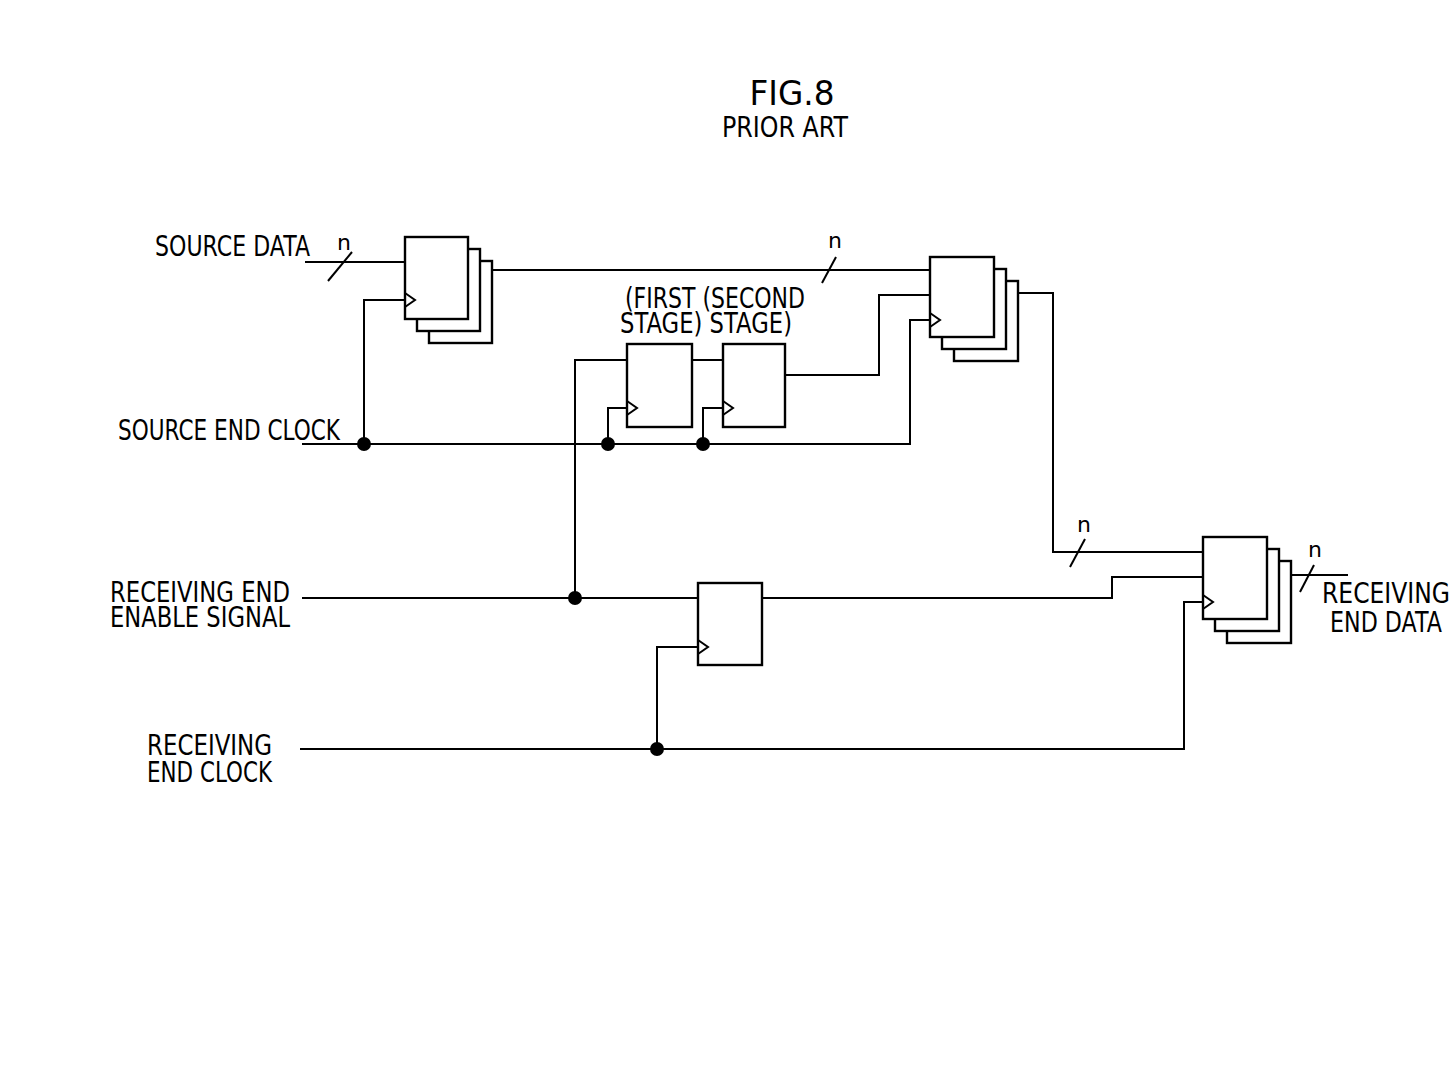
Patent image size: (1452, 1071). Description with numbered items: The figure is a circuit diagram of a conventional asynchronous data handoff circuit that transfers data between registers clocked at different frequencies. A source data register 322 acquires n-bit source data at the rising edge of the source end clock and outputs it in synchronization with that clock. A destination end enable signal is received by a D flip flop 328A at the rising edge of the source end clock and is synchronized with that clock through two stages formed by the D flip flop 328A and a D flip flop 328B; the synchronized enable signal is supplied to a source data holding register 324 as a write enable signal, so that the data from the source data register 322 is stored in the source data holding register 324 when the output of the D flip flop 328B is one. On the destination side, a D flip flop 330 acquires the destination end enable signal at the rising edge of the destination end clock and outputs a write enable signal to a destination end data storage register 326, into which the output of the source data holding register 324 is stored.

The source data register 322 is at (398, 319).
The source data holding register 324 is at (920, 255).
The destination end data storage register 326 is at (1193, 537).
The D flip flop 328A is at (657, 427).
The D flip flop 328B is at (753, 427).
The D flip flop 330 is at (732, 582).